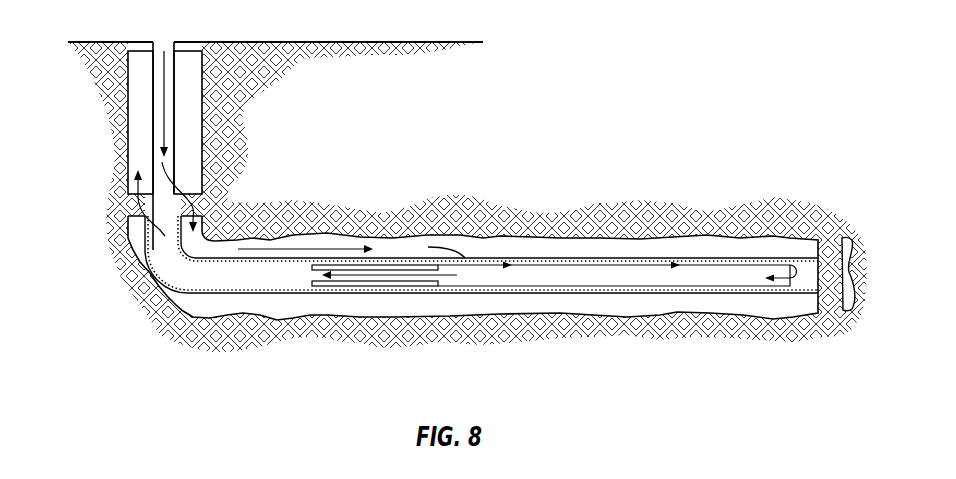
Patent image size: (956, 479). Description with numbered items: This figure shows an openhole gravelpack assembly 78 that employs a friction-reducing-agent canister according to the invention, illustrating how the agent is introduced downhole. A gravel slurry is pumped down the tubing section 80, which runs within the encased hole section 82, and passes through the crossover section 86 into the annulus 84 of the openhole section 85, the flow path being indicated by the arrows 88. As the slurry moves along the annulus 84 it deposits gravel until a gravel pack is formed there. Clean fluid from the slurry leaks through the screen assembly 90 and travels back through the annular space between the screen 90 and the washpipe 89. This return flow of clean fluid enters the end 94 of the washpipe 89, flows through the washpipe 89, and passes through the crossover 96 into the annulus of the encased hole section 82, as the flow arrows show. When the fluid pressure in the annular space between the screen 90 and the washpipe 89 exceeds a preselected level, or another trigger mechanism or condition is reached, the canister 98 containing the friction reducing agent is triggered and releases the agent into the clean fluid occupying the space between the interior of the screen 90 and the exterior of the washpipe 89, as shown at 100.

The openhole gravelpack assembly 78 is at (577, 86).
The tubing section 80 is at (153, 140).
The encased hole section 82 is at (202, 160).
The annulus 84 is at (663, 250).
The openhole section 85 is at (775, 237).
The crossover section 86 is at (215, 202).
The arrows 88 is at (323, 248).
The washpipe 89 is at (680, 287).
The screen assembly 90 is at (603, 294).
The end of the washpipe 94 is at (755, 284).
The crossover 96 is at (143, 196).
The canister 98 is at (357, 283).
The release location of friction reducing agent 100 is at (452, 260).